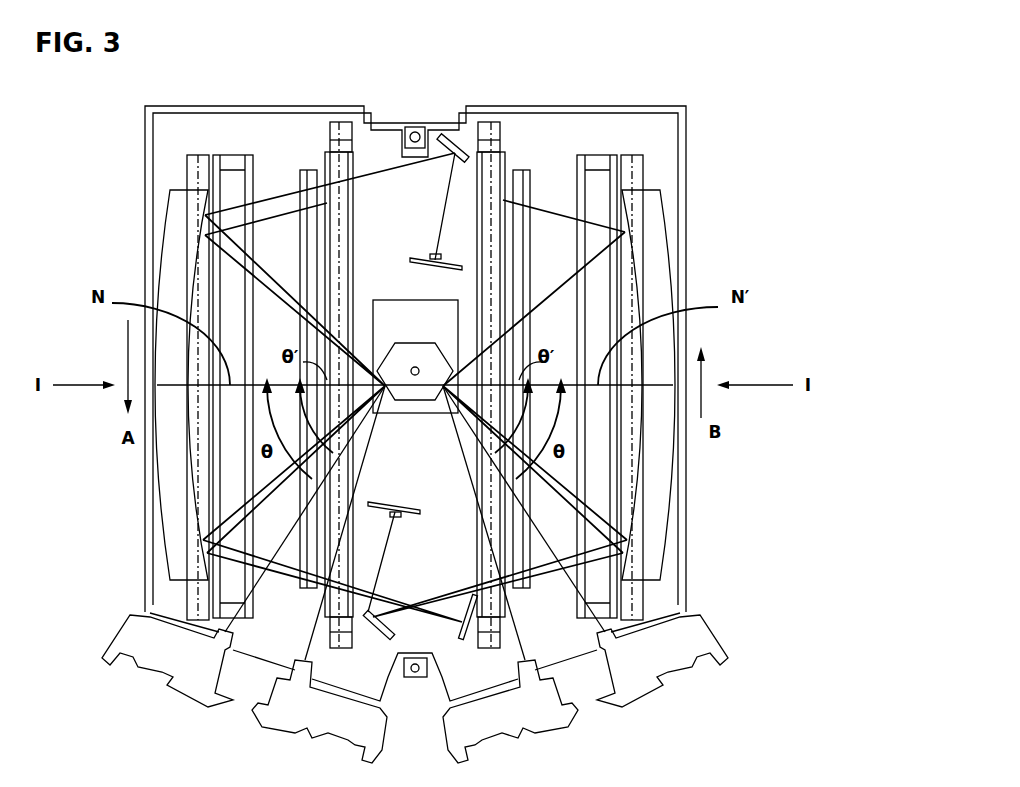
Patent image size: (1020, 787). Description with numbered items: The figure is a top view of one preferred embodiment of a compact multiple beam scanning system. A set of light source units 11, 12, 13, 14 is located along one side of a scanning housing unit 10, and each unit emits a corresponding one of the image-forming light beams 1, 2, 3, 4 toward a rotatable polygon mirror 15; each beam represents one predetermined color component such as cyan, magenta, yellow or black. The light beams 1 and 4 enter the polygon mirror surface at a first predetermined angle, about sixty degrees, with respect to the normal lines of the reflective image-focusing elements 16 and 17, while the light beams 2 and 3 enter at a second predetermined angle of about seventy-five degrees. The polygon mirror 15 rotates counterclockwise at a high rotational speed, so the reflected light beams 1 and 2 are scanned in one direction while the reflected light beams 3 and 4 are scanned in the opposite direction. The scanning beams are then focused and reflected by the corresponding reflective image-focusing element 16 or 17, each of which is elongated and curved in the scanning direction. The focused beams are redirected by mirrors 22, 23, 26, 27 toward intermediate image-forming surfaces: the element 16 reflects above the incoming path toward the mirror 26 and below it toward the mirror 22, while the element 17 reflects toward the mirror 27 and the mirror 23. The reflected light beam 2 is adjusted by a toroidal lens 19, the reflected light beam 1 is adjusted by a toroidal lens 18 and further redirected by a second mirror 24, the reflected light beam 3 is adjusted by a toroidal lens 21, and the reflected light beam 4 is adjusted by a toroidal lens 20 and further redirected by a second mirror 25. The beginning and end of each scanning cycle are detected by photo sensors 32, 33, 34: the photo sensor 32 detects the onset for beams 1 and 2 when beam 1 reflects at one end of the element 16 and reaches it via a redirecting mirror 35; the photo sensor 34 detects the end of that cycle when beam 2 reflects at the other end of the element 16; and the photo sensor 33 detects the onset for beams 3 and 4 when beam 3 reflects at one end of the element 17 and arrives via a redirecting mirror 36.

The image-forming light beam 1 is at (292, 538).
The image-forming light beam 2 is at (312, 628).
The image-forming light beam 3 is at (522, 632).
The image-forming light beam 4 is at (592, 628).
The scanning housing unit 10 is at (284, 130).
The light source unit 11 is at (167, 661).
The light source unit 12 is at (319, 711).
The light source unit 13 is at (510, 711).
The light source unit 14 is at (662, 661).
The rotatable polygon mirror 15 is at (415, 343).
The reflective image-focusing element 16 is at (167, 463).
The reflective image-focusing element 17 is at (658, 490).
The toroidal lens 18 is at (229, 162).
The toroidal lens 19 is at (343, 173).
The toroidal lens 20 is at (597, 178).
The toroidal lens 21 is at (485, 231).
The mirror 22 is at (307, 172).
The mirror 23 is at (520, 172).
The second mirror 24 is at (197, 154).
The second mirror 25 is at (634, 170).
The mirror 26 is at (345, 125).
The mirror 27 is at (481, 123).
The photo sensor 32 is at (431, 262).
The photo sensor 33 is at (396, 503).
The photo sensor 34 is at (464, 643).
The redirecting mirror 35 is at (452, 138).
The redirecting mirror 36 is at (378, 640).